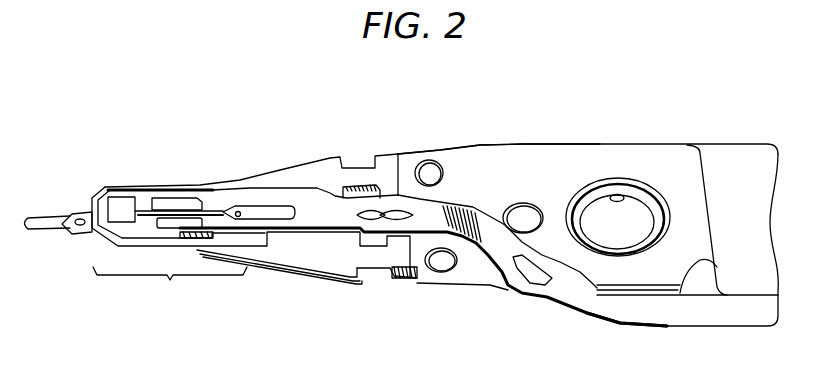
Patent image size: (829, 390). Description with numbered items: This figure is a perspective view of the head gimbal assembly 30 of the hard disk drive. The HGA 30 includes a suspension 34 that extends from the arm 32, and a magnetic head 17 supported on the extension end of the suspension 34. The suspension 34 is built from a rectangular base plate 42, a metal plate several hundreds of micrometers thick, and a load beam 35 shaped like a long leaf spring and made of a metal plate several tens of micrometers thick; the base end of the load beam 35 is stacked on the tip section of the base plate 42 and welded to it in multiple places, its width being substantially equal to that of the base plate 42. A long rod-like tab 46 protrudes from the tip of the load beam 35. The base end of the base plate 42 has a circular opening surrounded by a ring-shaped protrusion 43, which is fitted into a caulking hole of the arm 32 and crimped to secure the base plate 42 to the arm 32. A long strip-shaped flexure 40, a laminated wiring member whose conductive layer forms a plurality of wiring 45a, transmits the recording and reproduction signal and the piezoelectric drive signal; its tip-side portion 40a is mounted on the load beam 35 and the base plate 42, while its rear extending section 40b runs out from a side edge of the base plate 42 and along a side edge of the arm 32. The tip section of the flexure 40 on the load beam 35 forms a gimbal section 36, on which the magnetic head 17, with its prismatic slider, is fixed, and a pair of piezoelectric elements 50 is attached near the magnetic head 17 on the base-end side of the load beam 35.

The magnetic head 17 is at (117, 203).
The head gimbal assembly 30 is at (483, 121).
The arm 32 is at (740, 160).
The suspension 34 is at (401, 125).
The load beam 35 is at (307, 252).
The gimbal section 36 is at (170, 247).
The flexure 40 is at (492, 243).
The tip-side portion 40a is at (330, 200).
The rear portion (extending section) 40b is at (655, 312).
The base plate 42 is at (557, 160).
The ring-shaped protrusion 43 is at (617, 193).
The wiring 45a is at (730, 315).
The tab 46 is at (40, 214).
The piezoelectric elements 50 is at (165, 200).